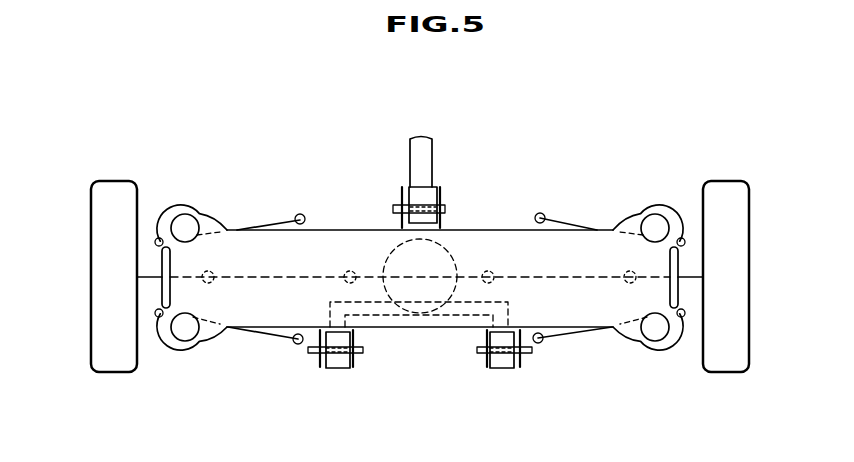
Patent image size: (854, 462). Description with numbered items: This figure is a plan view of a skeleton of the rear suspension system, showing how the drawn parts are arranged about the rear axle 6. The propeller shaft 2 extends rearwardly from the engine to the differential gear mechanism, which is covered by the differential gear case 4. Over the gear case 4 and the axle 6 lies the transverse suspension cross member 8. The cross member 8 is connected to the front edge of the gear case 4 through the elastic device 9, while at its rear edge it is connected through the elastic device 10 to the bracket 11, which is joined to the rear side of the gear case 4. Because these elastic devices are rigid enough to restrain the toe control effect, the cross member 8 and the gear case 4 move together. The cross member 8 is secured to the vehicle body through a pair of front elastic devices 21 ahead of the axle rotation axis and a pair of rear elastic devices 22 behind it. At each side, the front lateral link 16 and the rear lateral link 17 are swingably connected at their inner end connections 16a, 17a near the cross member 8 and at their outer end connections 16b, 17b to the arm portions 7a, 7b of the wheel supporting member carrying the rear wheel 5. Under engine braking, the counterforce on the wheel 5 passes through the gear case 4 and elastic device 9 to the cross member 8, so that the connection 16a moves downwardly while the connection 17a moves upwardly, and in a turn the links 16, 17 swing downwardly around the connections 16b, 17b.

The propeller shaft 2 is at (423, 150).
The differential gear case 4 is at (442, 262).
The rear wheel 5 is at (117, 371).
The axle 6 is at (323, 276).
The arm portion 7a is at (162, 266).
The arm portion 7b is at (162, 298).
The suspension cross member 8 is at (310, 247).
The elastic device 9 is at (428, 200).
The elastic device 10 is at (343, 360).
The bracket 11 is at (385, 308).
The front lateral link 16 is at (268, 226).
The inner end connection 16a is at (297, 213).
The outer end connection 16b is at (159, 237).
The rear lateral link 17 is at (240, 328).
The inner end connection 17a is at (297, 345).
The outer end connection 17b is at (158, 318).
The front elastic device 21 is at (189, 222).
The rear elastic device 22 is at (190, 328).